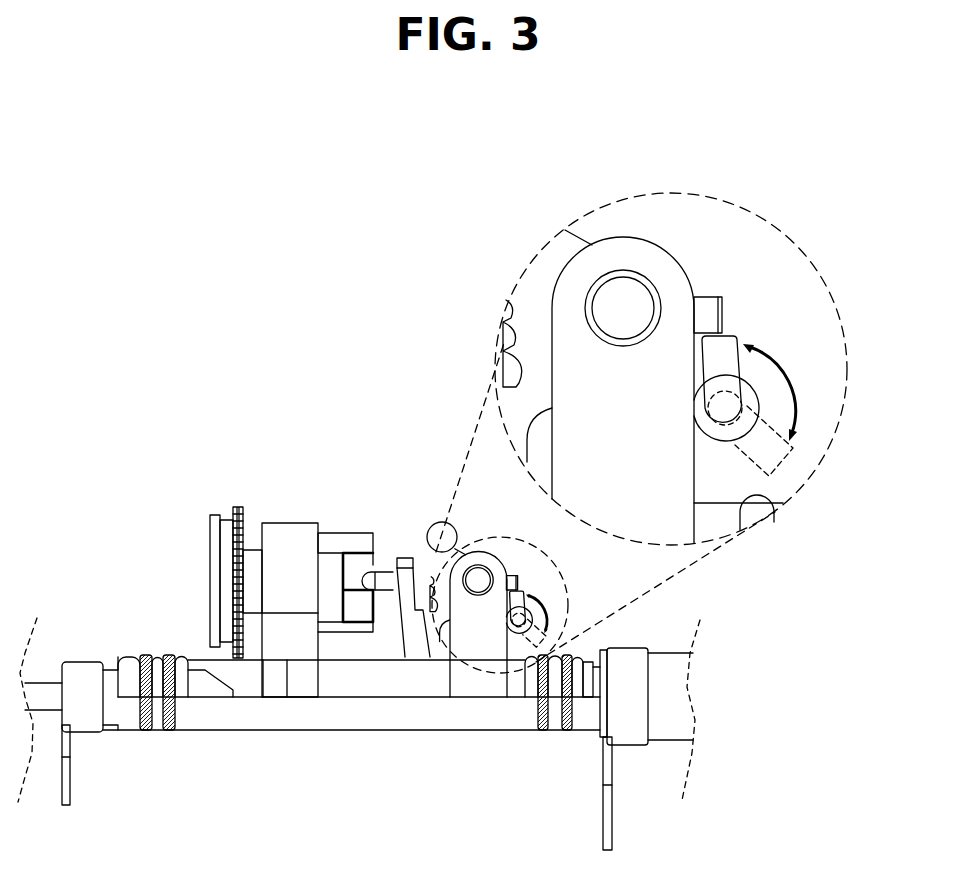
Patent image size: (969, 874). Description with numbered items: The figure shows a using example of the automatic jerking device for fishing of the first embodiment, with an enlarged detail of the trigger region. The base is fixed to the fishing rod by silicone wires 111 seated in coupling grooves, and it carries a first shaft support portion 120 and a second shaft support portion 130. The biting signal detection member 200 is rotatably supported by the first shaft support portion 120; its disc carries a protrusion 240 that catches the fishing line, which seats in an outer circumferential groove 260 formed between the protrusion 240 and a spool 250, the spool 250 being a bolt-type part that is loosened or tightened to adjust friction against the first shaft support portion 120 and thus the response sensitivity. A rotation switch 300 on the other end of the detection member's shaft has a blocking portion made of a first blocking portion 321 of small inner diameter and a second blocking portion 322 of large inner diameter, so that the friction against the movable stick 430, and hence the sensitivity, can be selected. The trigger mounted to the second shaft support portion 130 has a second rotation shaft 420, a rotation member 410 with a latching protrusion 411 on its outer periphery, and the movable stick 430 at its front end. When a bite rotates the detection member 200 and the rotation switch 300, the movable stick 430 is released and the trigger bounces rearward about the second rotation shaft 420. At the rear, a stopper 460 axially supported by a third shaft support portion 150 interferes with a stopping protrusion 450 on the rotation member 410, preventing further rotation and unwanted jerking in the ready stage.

The silicone wire 111 is at (168, 728).
The first shaft support portion 120 is at (298, 602).
The second shaft support portion 130 is at (568, 303).
The third shaft support portion 150 is at (778, 408).
The biting signal detection member 200 is at (198, 500).
The protrusion 240 is at (240, 507).
The spool 250 is at (215, 590).
The outer circumferential groove 260 is at (227, 535).
The rotation switch 300 is at (336, 540).
The first blocking portion 321 is at (363, 540).
The second blocking portion 322 is at (357, 625).
The rotation member 410 is at (558, 250).
The latching protrusion 411 is at (502, 337).
The second rotation shaft 420 is at (633, 300).
The movable stick 430 is at (382, 575).
The stopping protrusion 450 is at (710, 307).
The stopper 460 is at (727, 357).